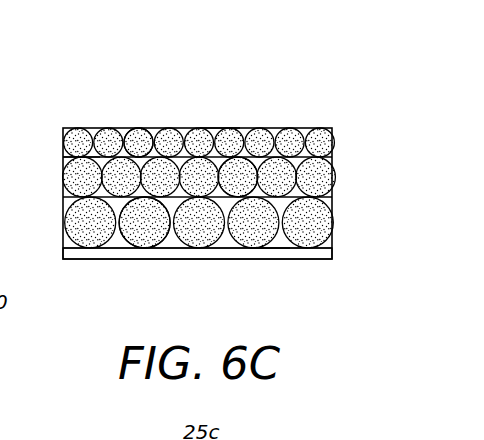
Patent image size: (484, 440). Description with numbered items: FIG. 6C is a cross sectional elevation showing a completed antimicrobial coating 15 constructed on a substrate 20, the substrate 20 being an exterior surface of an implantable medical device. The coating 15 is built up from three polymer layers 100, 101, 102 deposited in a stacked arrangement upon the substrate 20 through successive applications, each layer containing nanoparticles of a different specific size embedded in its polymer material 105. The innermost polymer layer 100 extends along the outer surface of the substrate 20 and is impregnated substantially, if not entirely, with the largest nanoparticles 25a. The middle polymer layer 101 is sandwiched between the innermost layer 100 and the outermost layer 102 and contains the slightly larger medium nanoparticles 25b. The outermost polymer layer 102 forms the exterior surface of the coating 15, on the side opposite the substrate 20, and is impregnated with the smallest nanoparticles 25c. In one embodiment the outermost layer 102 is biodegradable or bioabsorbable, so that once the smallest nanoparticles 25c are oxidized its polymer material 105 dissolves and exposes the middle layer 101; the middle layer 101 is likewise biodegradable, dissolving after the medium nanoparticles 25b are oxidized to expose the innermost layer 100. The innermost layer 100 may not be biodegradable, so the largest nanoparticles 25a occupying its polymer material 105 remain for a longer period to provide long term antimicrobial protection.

The antimicrobial coating 15 is at (418, 127).
The substrate 20 is at (332, 253).
The innermost polymer layer 100 is at (338, 197).
The middle polymer layer 101 is at (338, 158).
The outermost polymer layer 102 is at (338, 128).
The polymer material 105 is at (125, 128).
The largest nanoparticles 25a is at (270, 245).
The medium nanoparticles 25b is at (63, 158).
The smallest nanoparticles 25c is at (218, 128).